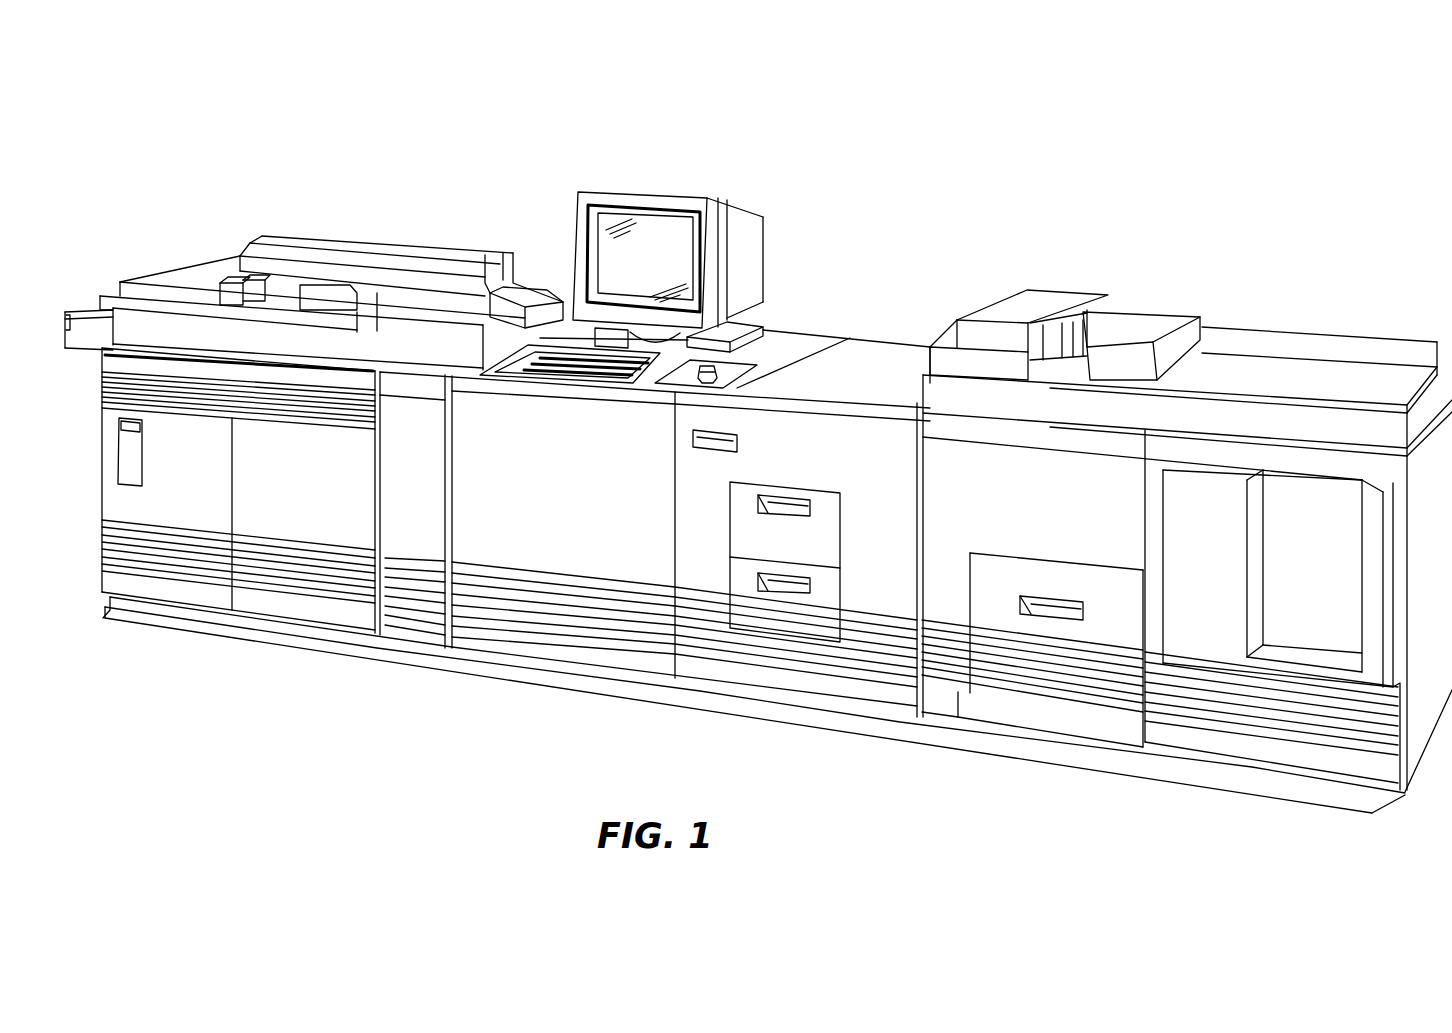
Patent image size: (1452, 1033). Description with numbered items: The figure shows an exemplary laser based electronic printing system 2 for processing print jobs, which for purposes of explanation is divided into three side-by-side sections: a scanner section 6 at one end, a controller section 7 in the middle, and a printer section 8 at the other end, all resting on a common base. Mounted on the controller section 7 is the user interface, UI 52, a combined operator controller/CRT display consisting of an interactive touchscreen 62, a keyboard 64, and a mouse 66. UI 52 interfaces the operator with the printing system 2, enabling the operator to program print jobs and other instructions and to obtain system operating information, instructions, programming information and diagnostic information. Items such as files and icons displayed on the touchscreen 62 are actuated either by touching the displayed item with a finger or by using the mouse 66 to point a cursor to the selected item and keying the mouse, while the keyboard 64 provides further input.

The printing system 2 is at (913, 74).
The scanner section 6 is at (366, 220).
The controller section 7 is at (884, 259).
The printer section 8 is at (1174, 280).
The UI 52 is at (681, 182).
The interactive touchscreen 62 is at (606, 266).
The keyboard 64 is at (561, 392).
The mouse 66 is at (671, 396).